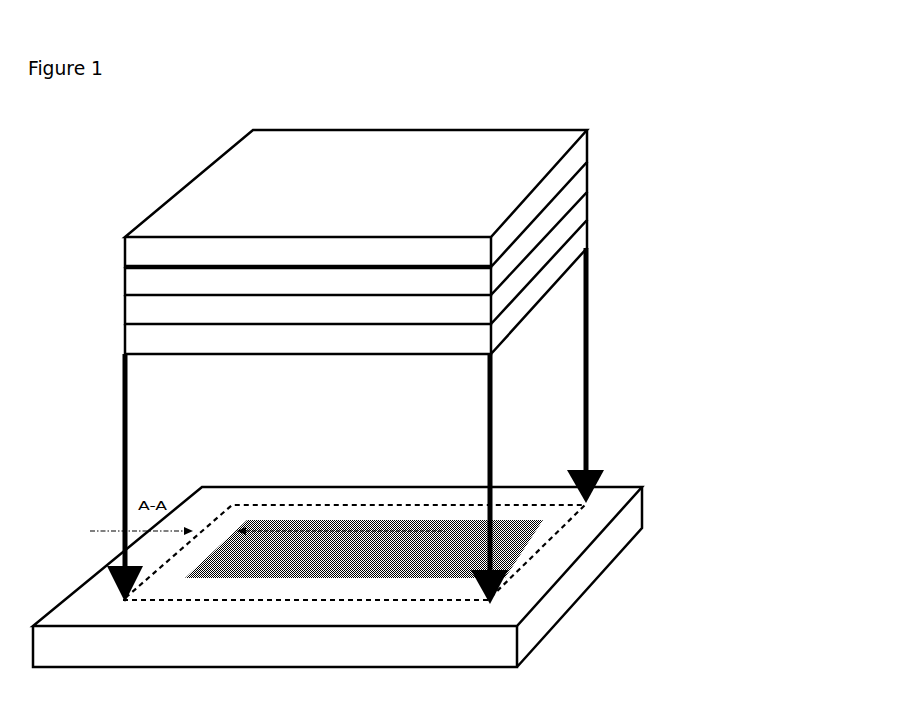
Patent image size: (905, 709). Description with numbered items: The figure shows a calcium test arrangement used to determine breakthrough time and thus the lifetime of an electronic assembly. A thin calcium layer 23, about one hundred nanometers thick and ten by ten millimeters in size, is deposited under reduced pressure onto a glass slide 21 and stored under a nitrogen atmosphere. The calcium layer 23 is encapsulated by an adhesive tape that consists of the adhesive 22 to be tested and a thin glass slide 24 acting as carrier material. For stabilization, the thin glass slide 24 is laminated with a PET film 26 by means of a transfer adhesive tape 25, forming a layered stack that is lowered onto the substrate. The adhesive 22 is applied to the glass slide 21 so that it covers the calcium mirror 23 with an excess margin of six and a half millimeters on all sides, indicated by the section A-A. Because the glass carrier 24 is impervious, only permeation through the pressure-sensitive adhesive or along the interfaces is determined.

The glass slide 21 is at (567, 595).
The adhesive 22 is at (523, 304).
The calcium layer 23 is at (533, 532).
The thin glass slide 24 is at (540, 254).
The transfer adhesive tape 25 is at (552, 208).
The PET film 26 is at (567, 168).